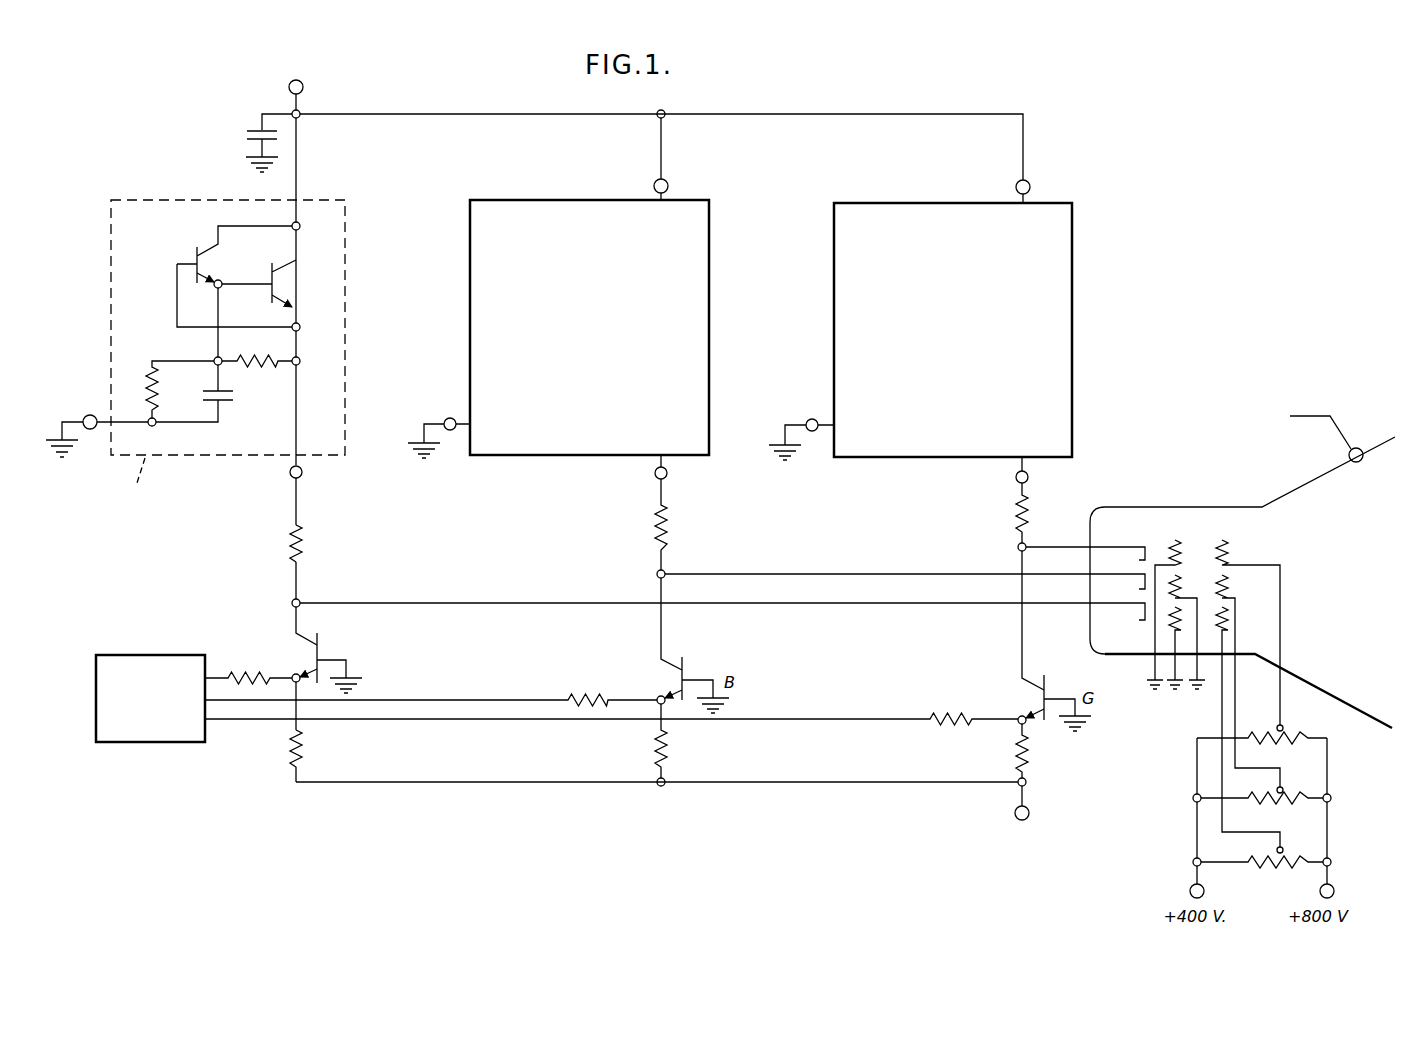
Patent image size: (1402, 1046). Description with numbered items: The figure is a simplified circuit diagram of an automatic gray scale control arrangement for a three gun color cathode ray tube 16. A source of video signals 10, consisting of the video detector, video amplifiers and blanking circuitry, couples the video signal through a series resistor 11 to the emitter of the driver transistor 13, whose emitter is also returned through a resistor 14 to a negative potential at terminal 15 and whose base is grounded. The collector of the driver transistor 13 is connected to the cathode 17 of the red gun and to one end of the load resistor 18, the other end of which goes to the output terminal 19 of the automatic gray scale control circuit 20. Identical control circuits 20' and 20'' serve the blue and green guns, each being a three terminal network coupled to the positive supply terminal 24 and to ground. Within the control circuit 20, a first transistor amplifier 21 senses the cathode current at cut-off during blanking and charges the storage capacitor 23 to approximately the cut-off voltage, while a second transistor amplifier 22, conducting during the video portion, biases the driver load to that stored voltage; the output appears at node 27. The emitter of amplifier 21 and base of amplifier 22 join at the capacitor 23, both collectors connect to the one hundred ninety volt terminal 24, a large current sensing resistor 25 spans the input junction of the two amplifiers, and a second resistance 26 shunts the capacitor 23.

The source of video signals 10 is at (148, 654).
The series resistor 11 is at (245, 669).
The driver transistor 13 is at (323, 652).
The resistor 14 is at (304, 750).
The terminal 15 is at (1030, 813).
The cathode ray tube 16 is at (1193, 503).
The cathode 17 is at (1143, 620).
The load resistor 18 is at (304, 546).
The output terminal 19 is at (303, 472).
The automatic gray scale control circuit 20 is at (195, 355).
The automatic gray scale control circuit 20' is at (589, 309).
The automatic gray scale control circuit 20'' is at (953, 311).
The first transistor amplifier 21 is at (193, 253).
The second transistor amplifier 22 is at (270, 278).
The storage capacitor 23 is at (204, 394).
The terminal 24 is at (304, 87).
The current sensing resistor 25 is at (258, 372).
The second resistance 26 is at (148, 384).
The output waveform 27 is at (215, 360).